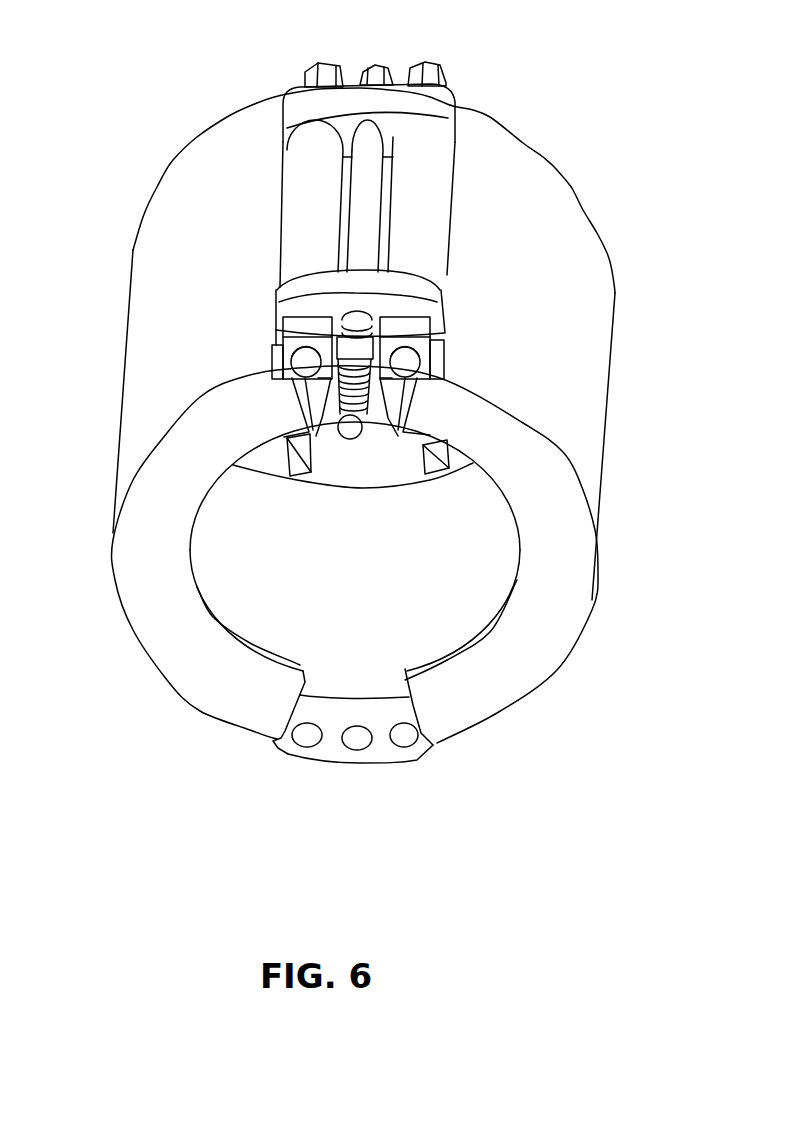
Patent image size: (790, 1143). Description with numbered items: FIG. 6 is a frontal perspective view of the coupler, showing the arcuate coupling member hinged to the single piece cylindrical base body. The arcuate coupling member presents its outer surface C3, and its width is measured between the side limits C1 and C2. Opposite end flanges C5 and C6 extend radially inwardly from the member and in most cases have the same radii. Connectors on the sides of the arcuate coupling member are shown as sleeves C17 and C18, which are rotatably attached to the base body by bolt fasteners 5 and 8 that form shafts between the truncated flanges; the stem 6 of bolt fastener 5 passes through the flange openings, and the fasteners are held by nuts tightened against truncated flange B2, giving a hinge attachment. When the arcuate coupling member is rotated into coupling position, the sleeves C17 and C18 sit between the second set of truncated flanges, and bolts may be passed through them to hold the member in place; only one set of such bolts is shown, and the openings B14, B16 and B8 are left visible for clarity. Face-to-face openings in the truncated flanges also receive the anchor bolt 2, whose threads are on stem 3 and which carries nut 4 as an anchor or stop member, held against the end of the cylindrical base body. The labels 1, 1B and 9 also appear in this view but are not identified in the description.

The body 1 is at (366, 205).
The inner wall of ring 1B is at (202, 545).
The anchor bolt 2 is at (376, 74).
The stem 3 is at (355, 430).
The nut 4 is at (333, 427).
The bolt fastener 5 is at (442, 72).
The stem 6 is at (425, 357).
The bolt fastener 8 is at (312, 70).
The left clamp block 9 is at (275, 350).
The truncated flange B2 is at (445, 288).
The opening B8 is at (356, 748).
The opening B14 is at (404, 735).
The opening B16 is at (307, 735).
The coupler width boundary C1 is at (233, 383).
The coupler width boundary C2 is at (232, 122).
The outer surface of arcuate coupling member C3 is at (553, 257).
The end flange C5 is at (222, 690).
The end flange C6 is at (293, 438).
The sleeve C17 is at (292, 205).
The sleeve C18 is at (450, 248).